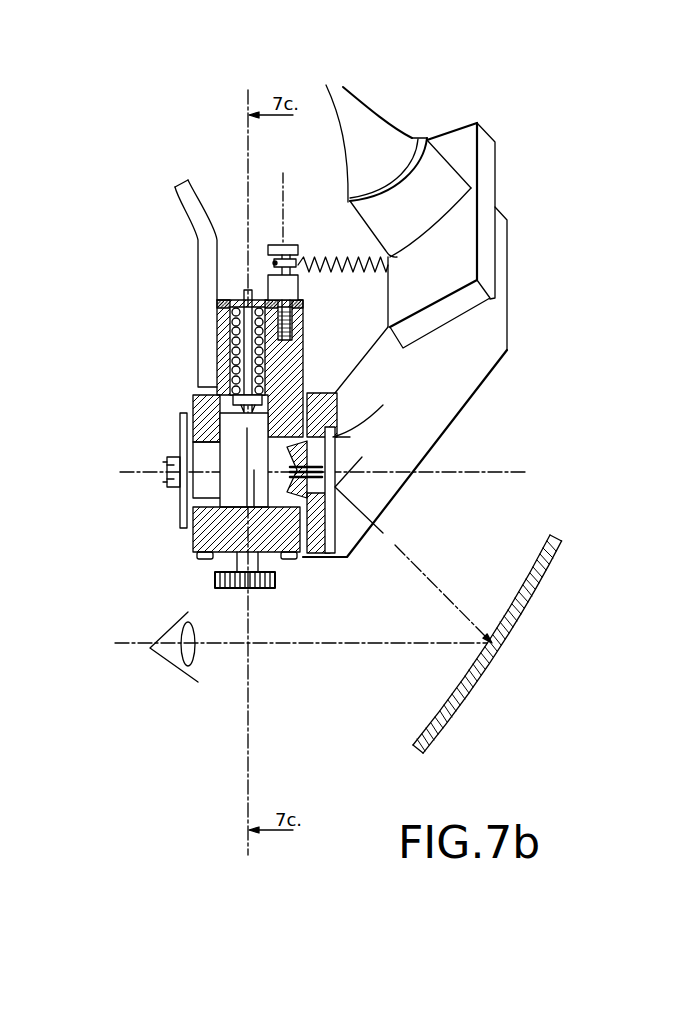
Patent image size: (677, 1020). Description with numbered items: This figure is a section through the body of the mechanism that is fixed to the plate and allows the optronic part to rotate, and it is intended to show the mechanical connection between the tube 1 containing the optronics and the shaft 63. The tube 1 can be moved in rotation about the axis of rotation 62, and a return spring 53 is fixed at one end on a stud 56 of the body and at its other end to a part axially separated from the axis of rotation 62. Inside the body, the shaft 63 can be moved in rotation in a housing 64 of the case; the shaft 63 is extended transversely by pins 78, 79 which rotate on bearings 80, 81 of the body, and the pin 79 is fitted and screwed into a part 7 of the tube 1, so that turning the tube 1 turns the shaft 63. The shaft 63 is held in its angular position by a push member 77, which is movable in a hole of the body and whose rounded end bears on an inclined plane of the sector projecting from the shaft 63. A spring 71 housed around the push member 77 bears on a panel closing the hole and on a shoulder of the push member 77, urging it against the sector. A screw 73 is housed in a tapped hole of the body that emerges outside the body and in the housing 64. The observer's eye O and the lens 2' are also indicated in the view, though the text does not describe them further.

The tube 1 is at (455, 400).
The lens 2' is at (487, 644).
The part of the tube 7 is at (325, 396).
The return spring 53 is at (347, 272).
The stud 56 is at (297, 246).
The axis of rotation 62 is at (480, 476).
The shaft 63 is at (270, 556).
The housing 64 is at (193, 407).
The spring 71 is at (218, 344).
The screw 73 is at (214, 582).
The push member 77 is at (250, 292).
The pin 78 is at (205, 485).
The pin 79 is at (288, 556).
The bearing 80 is at (194, 526).
The bearing 81 is at (368, 445).
The observer eye O is at (178, 660).